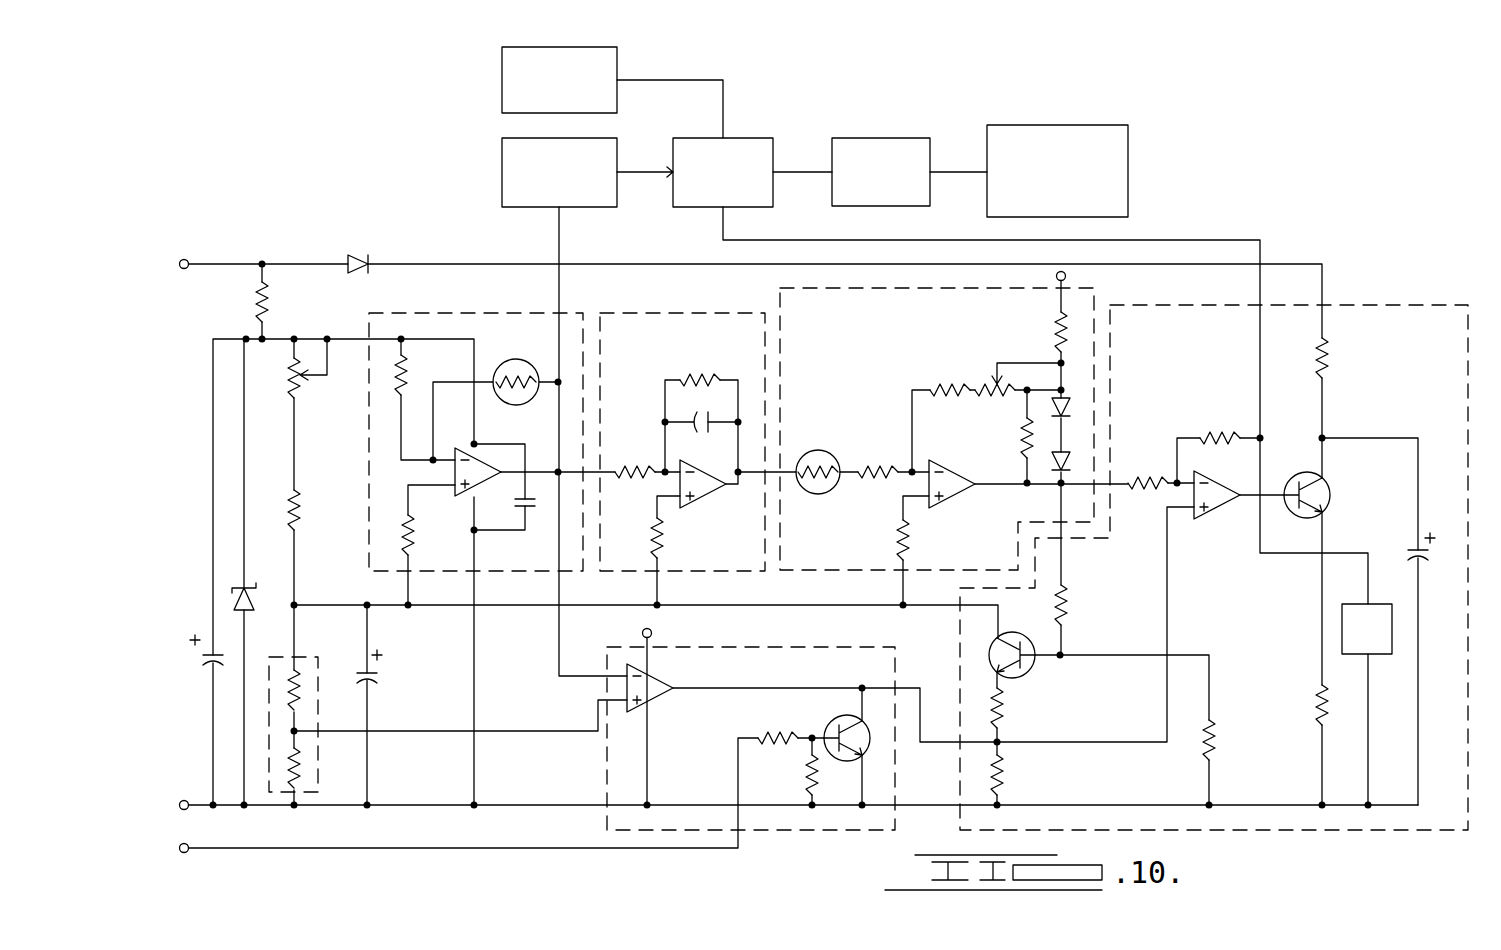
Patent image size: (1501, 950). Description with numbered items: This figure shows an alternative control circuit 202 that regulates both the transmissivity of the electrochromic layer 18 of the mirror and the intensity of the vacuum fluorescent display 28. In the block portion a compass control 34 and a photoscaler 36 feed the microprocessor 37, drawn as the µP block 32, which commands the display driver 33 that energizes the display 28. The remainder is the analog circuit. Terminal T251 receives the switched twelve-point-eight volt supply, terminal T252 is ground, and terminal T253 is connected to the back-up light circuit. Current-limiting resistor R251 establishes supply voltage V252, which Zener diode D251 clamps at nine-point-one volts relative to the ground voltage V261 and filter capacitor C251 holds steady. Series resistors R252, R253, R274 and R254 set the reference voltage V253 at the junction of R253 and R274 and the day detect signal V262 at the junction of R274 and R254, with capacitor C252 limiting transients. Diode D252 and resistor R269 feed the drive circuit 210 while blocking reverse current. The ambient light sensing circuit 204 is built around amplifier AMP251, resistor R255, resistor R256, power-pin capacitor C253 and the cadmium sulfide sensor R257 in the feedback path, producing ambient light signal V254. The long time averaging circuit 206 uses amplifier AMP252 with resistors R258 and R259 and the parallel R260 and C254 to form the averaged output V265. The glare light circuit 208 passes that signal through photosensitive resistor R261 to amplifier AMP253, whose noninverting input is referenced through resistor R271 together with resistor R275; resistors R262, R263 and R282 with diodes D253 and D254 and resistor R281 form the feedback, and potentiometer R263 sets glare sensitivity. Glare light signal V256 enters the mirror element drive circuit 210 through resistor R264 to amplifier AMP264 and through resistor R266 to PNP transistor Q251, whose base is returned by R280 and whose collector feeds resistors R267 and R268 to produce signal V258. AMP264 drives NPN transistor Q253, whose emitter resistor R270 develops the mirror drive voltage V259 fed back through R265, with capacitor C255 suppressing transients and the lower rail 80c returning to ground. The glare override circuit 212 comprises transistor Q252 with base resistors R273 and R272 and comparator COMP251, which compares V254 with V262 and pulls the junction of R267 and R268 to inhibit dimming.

The compass control 34 is at (502, 84).
The photoscaler 36 is at (502, 180).
The microprocessor with A/D 32 is at (773, 142).
The microprocessor 37 is at (683, 208).
The display driver 33 is at (930, 142).
The vacuum fluorescent display 28 is at (1128, 178).
The control circuit 202 is at (290, 196).
The ambient light sensing circuit 204 is at (480, 312).
The long time averaging circuit 206 is at (706, 312).
The glare light circuit 208 is at (880, 290).
The mirror element drive circuit 210 is at (1418, 304).
The glare override circuit 212 is at (742, 645).
The electrochromic layer 18 is at (1390, 656).
The ground connection 80c is at (1310, 818).
The mirror terminal T251 is at (184, 259).
The terminal T252 is at (184, 800).
The terminal T253 is at (184, 853).
The Zener diode D251 is at (236, 598).
The diode D252 is at (360, 255).
The diode D253 is at (1068, 412).
The diode D254 is at (1068, 466).
The current limiting resistor R251 is at (258, 302).
The resistor R252 is at (300, 390).
The resistor R253 is at (300, 495).
The resistor R254 is at (296, 775).
The resistor R255 is at (408, 385).
The resistor R256 is at (404, 530).
The cadmium sulfide resistor R257 is at (536, 362).
The resistor R258 is at (636, 468).
The resistor R259 is at (652, 540).
The resistor R260 is at (702, 376).
The cadmium sulfide photosensitive resistor R261 is at (820, 460).
The resistor R262 is at (942, 386).
The potentiometer R263 is at (985, 382).
The resistor R264 is at (1146, 490).
The resistor R265 is at (1220, 434).
The resistor R266 is at (1066, 620).
The resistor R267 is at (1000, 698).
The resistor R268 is at (1003, 770).
The resistor R269 is at (1328, 362).
The resistor R270 is at (1318, 692).
The resistor R271 is at (882, 468).
The resistor R272 is at (808, 785).
The resistor R273 is at (796, 722).
The resistor R274 is at (298, 690).
The resistor R275 is at (900, 542).
The resistor R280 is at (1214, 742).
The resistor R281 is at (1066, 338).
The resistor R282 is at (1022, 446).
The filter capacitor C251 is at (204, 662).
The capacitor C252 is at (378, 674).
The capacitor C253 is at (540, 510).
The capacitor C254 is at (694, 416).
The capacitor C255 is at (1428, 560).
The PNP transistor Q251 is at (1000, 645).
The NPN transistor Q252 is at (845, 715).
The NPN transistor Q253 is at (1335, 484).
The operational amplifier AMP251 is at (455, 474).
The operational amplifier AMP252 is at (700, 495).
The operational amplifier AMP253 is at (948, 497).
The operational amplifier AMP264 is at (1228, 510).
The comparator COMP251 is at (660, 690).
The supply voltage V252 is at (348, 338).
The reference voltage V253 is at (488, 606).
The ambient light signal V254 is at (556, 470).
The glare light signal V256 is at (1064, 487).
The collector voltage signal V258 is at (1134, 741).
The mirror drive voltage V259 is at (1328, 548).
The ground voltage V261 is at (578, 803).
The day detect signal V262 is at (415, 734).
The voltage node V265 is at (742, 474).